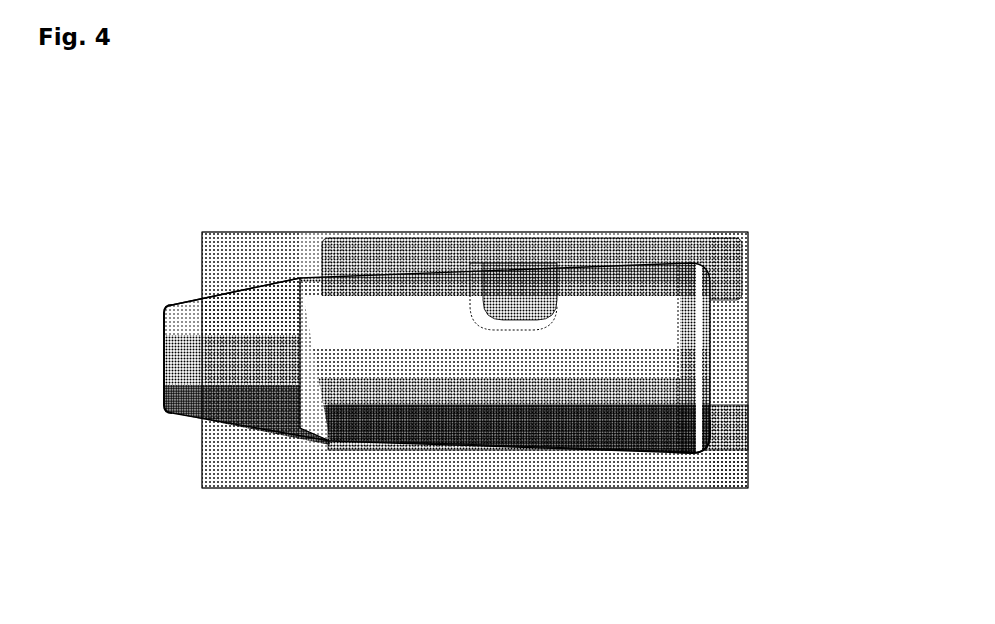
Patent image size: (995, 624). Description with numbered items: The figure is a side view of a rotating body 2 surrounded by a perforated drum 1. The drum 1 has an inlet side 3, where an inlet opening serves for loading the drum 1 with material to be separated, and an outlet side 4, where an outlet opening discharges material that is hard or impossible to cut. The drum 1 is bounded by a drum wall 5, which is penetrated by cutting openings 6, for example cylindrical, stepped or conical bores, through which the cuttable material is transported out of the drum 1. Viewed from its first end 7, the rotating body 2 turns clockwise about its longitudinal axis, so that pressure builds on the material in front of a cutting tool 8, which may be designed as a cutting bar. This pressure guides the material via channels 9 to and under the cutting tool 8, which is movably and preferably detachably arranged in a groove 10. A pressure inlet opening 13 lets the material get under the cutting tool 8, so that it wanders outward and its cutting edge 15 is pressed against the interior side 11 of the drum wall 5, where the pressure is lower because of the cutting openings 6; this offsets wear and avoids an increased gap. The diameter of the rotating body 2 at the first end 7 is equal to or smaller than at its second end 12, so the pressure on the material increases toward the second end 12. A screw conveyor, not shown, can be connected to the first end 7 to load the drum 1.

The drum 1 is at (232, 238).
The rotating body 2 is at (200, 343).
The inlet side 3 is at (198, 457).
The outlet side 4 is at (750, 400).
The drum wall 5 is at (721, 248).
The cutting openings 6 is at (283, 262).
The first end 7 is at (165, 362).
The cutting tool 8 is at (487, 257).
The channels 9 is at (523, 318).
The groove 10 is at (684, 420).
The interior side 11 is at (205, 283).
The second end 12 is at (712, 342).
The pressure inlet opening 13 is at (520, 307).
The cutting edge 15 is at (392, 428).